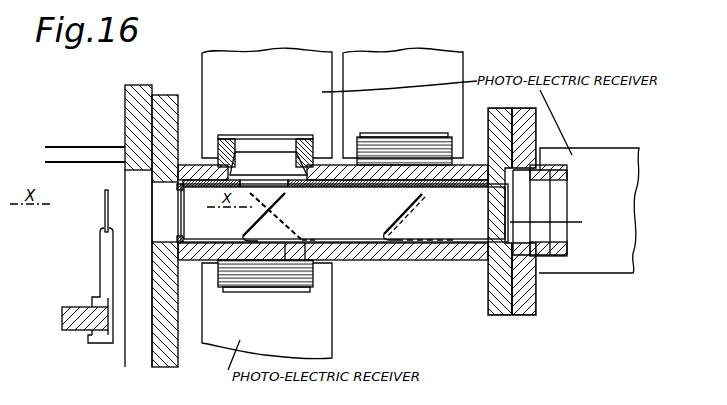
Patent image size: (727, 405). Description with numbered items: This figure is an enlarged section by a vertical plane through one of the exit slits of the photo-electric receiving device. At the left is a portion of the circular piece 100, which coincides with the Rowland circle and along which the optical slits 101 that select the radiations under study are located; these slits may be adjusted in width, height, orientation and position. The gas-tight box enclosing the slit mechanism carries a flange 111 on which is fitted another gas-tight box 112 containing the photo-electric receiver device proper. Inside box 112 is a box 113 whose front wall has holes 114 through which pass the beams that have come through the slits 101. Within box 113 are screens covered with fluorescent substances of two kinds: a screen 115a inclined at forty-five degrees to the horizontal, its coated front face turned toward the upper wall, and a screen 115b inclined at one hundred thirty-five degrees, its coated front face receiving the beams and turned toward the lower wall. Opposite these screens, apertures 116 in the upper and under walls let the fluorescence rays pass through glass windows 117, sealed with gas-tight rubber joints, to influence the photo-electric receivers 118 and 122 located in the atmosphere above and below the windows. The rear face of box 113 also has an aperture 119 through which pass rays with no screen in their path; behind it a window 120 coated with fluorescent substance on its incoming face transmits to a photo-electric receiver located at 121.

The circular piece 100 is at (77, 313).
The optical slit 101 is at (103, 222).
The flange 111 is at (147, 120).
The box 112 is at (427, 248).
The box 113 is at (357, 232).
The hole 114 is at (182, 205).
The screen 115a is at (263, 221).
The screen 115b is at (288, 231).
The aperture 116 is at (283, 184).
The glass window 117 is at (252, 135).
The photo-electric receiver 118 is at (367, 70).
The aperture 119 is at (563, 222).
The window 120 is at (567, 200).
The photo-electric receiver 121 is at (607, 168).
The photo-electric receiver 122 is at (293, 338).